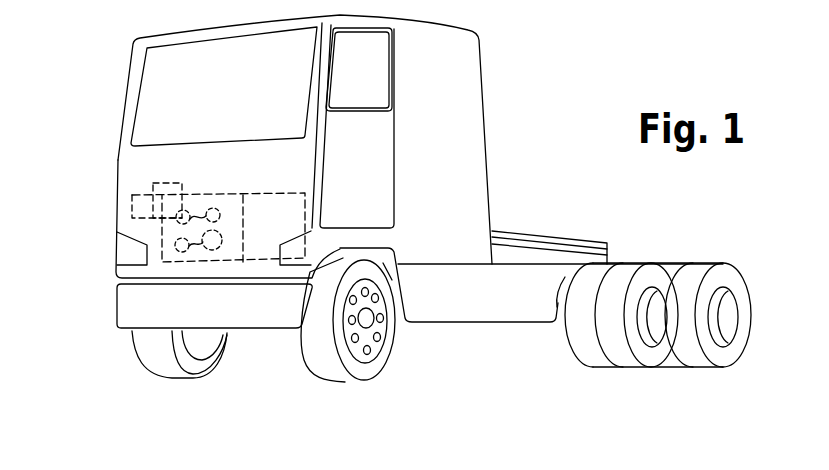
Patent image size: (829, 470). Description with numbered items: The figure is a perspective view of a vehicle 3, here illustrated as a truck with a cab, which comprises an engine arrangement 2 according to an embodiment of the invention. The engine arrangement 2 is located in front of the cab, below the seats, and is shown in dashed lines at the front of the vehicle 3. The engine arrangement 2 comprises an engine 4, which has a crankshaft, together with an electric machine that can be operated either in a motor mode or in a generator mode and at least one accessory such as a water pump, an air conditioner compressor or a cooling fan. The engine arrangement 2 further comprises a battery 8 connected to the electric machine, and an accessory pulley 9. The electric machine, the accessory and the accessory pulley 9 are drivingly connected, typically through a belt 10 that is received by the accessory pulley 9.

The vehicle 3 is at (98, 89).
The engine arrangement 2 is at (292, 190).
The engine 4 is at (243, 195).
The battery 8 is at (143, 207).
The accessory pulley 9 is at (212, 241).
The belt 10 is at (196, 243).